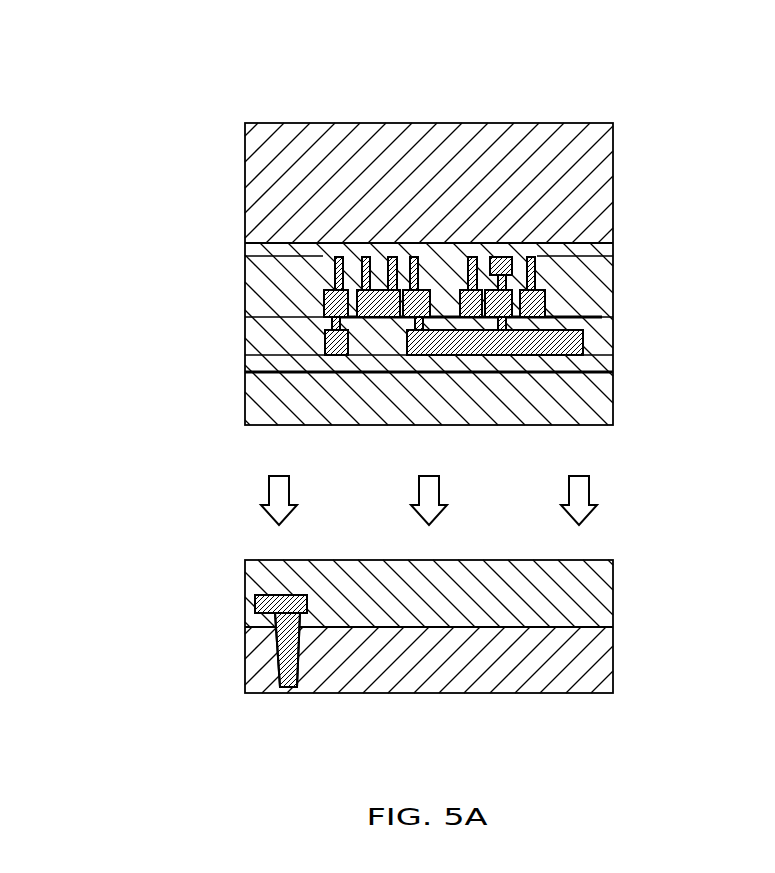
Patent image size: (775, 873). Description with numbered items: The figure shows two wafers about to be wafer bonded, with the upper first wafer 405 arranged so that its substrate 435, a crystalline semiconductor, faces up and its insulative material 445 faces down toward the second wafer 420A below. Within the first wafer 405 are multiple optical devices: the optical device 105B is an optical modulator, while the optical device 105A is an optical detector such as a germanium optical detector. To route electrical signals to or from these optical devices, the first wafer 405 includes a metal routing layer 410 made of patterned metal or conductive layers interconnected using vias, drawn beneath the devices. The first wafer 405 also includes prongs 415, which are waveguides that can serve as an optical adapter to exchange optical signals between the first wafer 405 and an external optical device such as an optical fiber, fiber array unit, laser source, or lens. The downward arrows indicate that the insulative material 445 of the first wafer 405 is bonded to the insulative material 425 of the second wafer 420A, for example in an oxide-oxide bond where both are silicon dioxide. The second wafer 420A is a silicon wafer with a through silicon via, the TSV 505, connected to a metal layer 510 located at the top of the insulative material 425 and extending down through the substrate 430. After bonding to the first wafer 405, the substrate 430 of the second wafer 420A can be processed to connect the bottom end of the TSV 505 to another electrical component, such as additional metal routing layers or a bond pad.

The first wafer 405 is at (237, 98).
The substrate 435 is at (500, 122).
The optical device 105B is at (350, 258).
The optical device 105A is at (509, 257).
The metal routing layer 410 is at (245, 358).
The prongs 415 is at (602, 360).
The insulative material 445 is at (603, 399).
The metal layer 510 is at (280, 596).
The TSV 505 is at (276, 630).
The second wafer 420A is at (225, 683).
The insulative material 425 is at (613, 598).
The substrate 430 is at (608, 655).